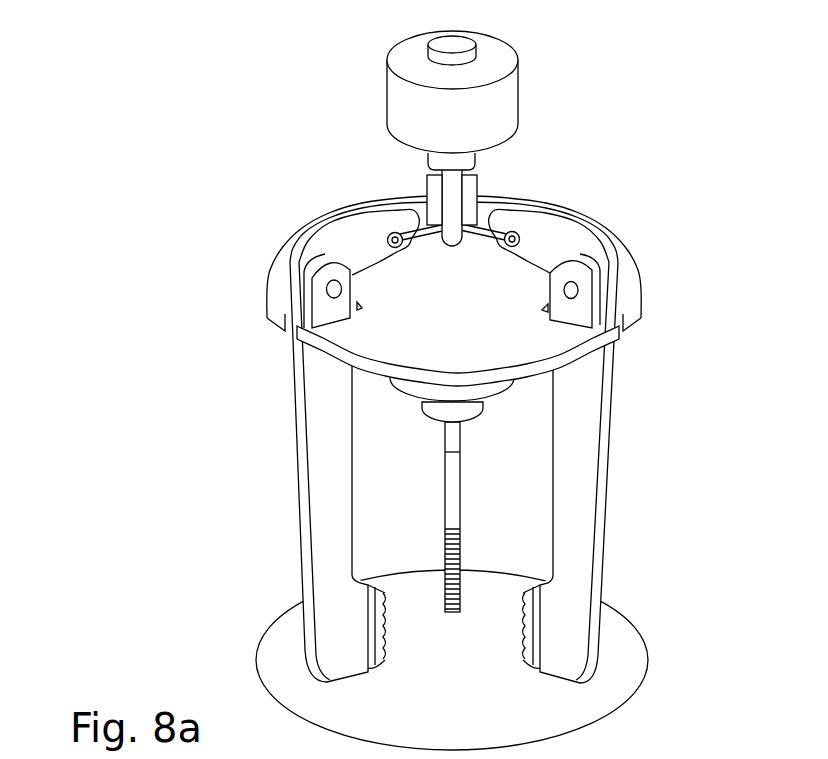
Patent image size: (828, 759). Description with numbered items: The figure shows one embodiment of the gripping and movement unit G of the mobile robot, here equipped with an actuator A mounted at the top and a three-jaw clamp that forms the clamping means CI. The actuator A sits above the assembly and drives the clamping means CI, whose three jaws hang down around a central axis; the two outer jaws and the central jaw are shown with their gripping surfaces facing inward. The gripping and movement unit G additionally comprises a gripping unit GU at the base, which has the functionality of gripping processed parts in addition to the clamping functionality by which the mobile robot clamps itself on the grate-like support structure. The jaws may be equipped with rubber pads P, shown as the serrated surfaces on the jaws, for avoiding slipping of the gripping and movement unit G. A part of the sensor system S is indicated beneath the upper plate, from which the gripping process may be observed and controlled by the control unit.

The gripping and movement unit G is at (186, 240).
The actuator A is at (508, 111).
The sensor system S is at (467, 413).
The clamping means CI is at (452, 517).
The rubber pads P is at (459, 545).
The gripping unit GU is at (544, 683).